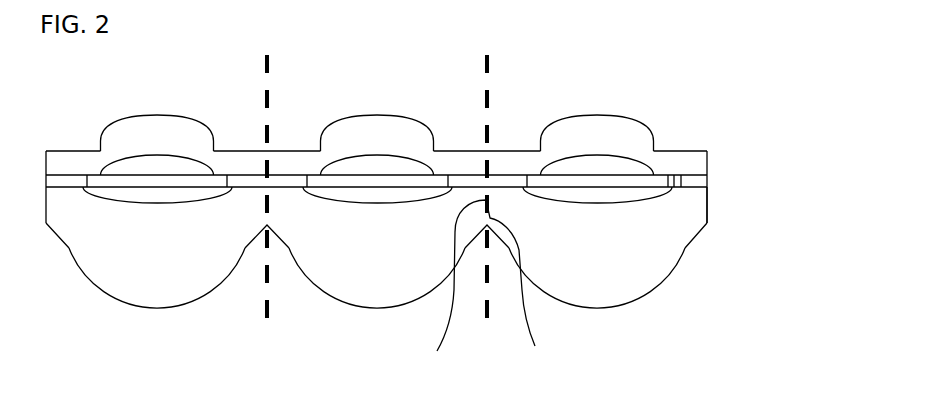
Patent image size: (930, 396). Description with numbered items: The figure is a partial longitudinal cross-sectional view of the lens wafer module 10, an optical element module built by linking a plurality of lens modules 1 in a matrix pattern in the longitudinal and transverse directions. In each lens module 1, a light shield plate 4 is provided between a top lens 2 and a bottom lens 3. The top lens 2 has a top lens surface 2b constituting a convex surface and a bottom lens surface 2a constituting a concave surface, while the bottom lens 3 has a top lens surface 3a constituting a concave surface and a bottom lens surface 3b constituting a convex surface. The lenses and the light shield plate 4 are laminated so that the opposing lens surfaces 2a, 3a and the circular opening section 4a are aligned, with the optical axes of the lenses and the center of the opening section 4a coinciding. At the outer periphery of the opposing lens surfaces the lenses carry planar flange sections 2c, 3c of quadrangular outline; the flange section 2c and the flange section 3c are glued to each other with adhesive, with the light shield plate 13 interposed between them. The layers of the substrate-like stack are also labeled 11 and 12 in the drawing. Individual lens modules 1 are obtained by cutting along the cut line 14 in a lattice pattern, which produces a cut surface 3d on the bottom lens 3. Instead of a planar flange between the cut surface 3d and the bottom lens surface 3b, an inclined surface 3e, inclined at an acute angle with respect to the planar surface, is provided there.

The lens module 1 is at (397, 150).
The top lens 2 is at (405, 155).
The bottom lens surface 2a is at (598, 172).
The top lens surface 2b is at (570, 121).
The flange section 2c is at (673, 188).
The bottom lens 3 is at (395, 245).
The top lens surface 3a is at (619, 203).
The bottom lens surface 3b is at (377, 306).
The flange section 3c is at (681, 176).
The cut surface 3d is at (737, 243).
The inclined surface 3e is at (57, 235).
The light shield plate 4 is at (690, 176).
The opening section 4a is at (573, 176).
The lens wafer module 10 is at (444, 181).
The upper substrate layer 11 is at (708, 165).
The lower substrate layer 12 is at (414, 206).
The light shield plate 13 is at (708, 181).
The cut line 14 is at (270, 96).